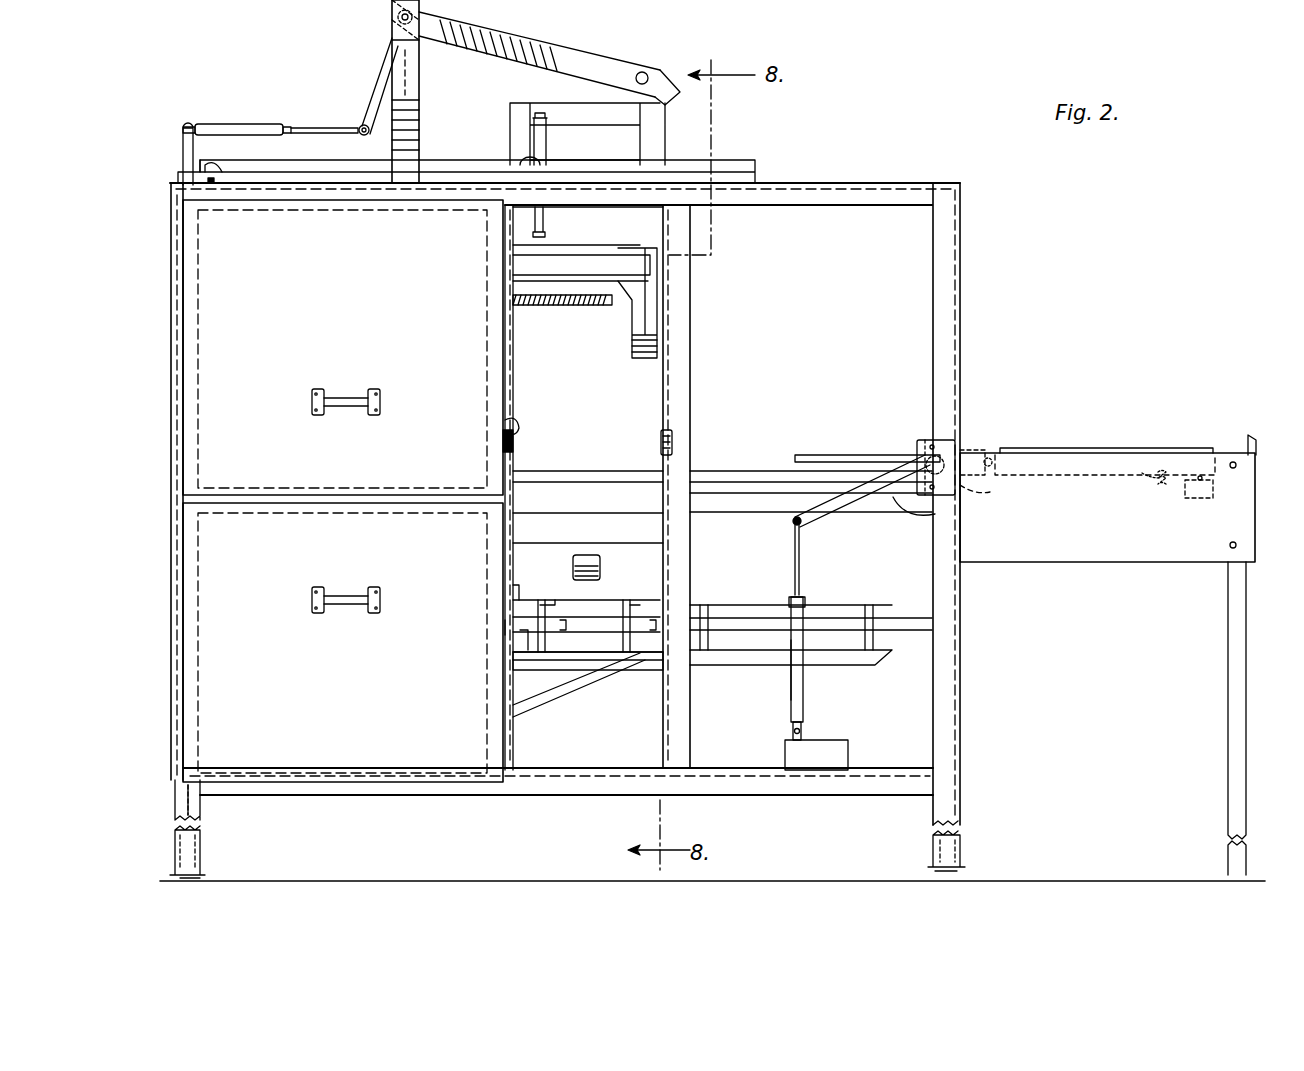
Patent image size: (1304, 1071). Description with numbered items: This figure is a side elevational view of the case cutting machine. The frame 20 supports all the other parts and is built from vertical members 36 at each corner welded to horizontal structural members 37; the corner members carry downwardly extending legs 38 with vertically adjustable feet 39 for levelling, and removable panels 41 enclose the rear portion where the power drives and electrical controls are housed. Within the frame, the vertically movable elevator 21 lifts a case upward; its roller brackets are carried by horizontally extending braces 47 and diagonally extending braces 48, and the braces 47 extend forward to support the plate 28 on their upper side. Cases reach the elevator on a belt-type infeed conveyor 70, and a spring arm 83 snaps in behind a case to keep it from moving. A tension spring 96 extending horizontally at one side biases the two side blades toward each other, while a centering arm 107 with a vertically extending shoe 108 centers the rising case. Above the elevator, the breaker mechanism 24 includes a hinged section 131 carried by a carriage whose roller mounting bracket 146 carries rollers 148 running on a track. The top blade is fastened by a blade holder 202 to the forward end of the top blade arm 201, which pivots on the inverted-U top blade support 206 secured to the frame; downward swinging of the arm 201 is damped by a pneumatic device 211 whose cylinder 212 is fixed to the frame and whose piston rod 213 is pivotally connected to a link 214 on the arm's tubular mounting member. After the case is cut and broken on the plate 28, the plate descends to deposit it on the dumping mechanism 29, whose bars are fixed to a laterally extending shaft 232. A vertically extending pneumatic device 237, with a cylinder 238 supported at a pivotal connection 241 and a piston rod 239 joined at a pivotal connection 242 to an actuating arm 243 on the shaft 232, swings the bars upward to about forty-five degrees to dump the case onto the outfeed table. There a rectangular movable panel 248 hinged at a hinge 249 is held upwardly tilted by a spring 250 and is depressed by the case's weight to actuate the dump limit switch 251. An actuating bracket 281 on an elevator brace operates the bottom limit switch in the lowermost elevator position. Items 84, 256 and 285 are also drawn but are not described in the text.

The frame 20 is at (965, 236).
The elevator 21 is at (507, 628).
The breaker mechanism 24 is at (672, 140).
The plate 28 is at (833, 605).
The dumping mechanism 29 is at (851, 455).
The vertical member 36 is at (942, 720).
The horizontal structural member 37 is at (877, 205).
The leg 38 is at (200, 822).
The foot 39 is at (180, 880).
The removable panel 41 is at (215, 526).
The horizontally extending brace 47 is at (655, 660).
The diagonally extending brace 48 is at (565, 700).
The infeed conveyor 70 is at (636, 594).
The spring arm 83 is at (672, 428).
The guide block 84 is at (515, 420).
The tension spring 96 is at (565, 300).
The centering arm 107 is at (520, 270).
The shoe 108 is at (643, 305).
The section 131 is at (518, 127).
The roller mounting bracket 146 is at (300, 160).
The roller 148 is at (232, 160).
The top blade arm 201 is at (545, 55).
The blade holder 202 is at (665, 82).
The top blade support 206 is at (418, 100).
The pneumatic device 211 is at (270, 110).
The cylinder 212 is at (218, 125).
The piston rod 213 is at (328, 122).
The link 214 is at (388, 68).
The shaft 232 is at (1087, 481).
The pneumatic device 237 is at (789, 700).
The cylinder 238 is at (805, 708).
The piston rod 239 is at (802, 553).
The pivotal connection 241 is at (790, 735).
The pivotal connection 242 is at (790, 523).
The actuating arm 243 is at (935, 514).
The movable panel 248 is at (1180, 445).
The hinge 249 is at (985, 455).
The spring 250 is at (1142, 473).
The dump limit switch 251 is at (1195, 498).
The stop 256 is at (1250, 435).
The actuating bracket 281 is at (572, 570).
The base 285 is at (840, 755).